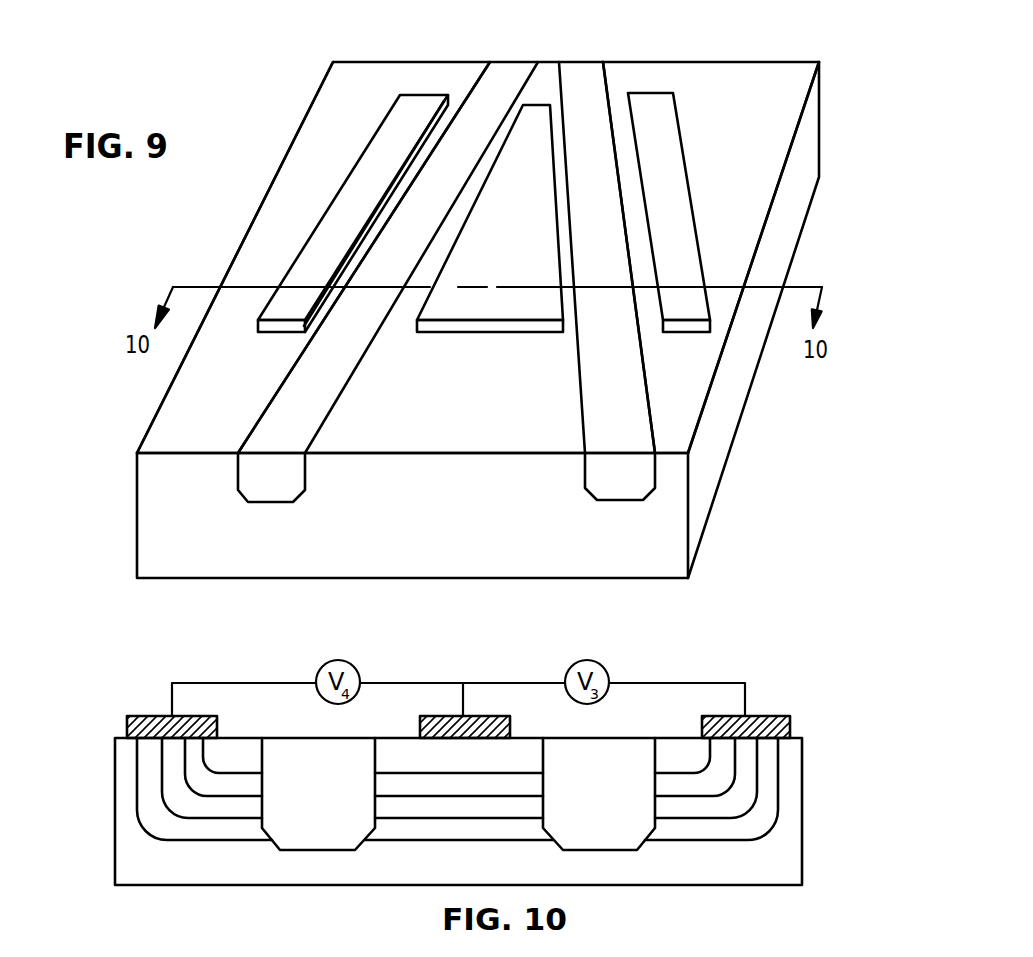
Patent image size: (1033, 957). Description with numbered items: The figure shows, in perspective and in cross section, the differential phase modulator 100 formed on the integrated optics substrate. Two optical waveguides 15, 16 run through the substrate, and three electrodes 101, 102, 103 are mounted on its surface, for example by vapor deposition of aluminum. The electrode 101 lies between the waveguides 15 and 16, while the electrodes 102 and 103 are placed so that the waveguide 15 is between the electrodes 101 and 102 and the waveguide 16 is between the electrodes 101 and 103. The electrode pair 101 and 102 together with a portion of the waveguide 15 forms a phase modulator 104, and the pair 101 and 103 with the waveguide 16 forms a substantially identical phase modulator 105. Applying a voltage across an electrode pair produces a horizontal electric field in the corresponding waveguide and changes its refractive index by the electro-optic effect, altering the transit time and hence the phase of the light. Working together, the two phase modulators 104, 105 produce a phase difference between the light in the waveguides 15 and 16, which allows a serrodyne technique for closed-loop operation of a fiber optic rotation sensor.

In FIG. 9, the differential phase modulator 100 is at (419, 437).
In FIG. 9, the electrode 101 is at (462, 333).
In FIG. 10, the electrode 101 is at (487, 713).
In FIG. 9, the electrode 102 is at (687, 183).
In FIG. 10, the electrode 102 is at (767, 712).
In FIG. 9, the electrode 103 is at (295, 267).
In FIG. 10, the electrode 103 is at (140, 715).
In FIG. 9, the phase modulator 104 is at (673, 72).
In FIG. 9, the phase modulator 105 is at (345, 109).
In FIG. 10, the optical waveguide 15 is at (620, 853).
In FIG. 10, the optical waveguide 16 is at (330, 853).